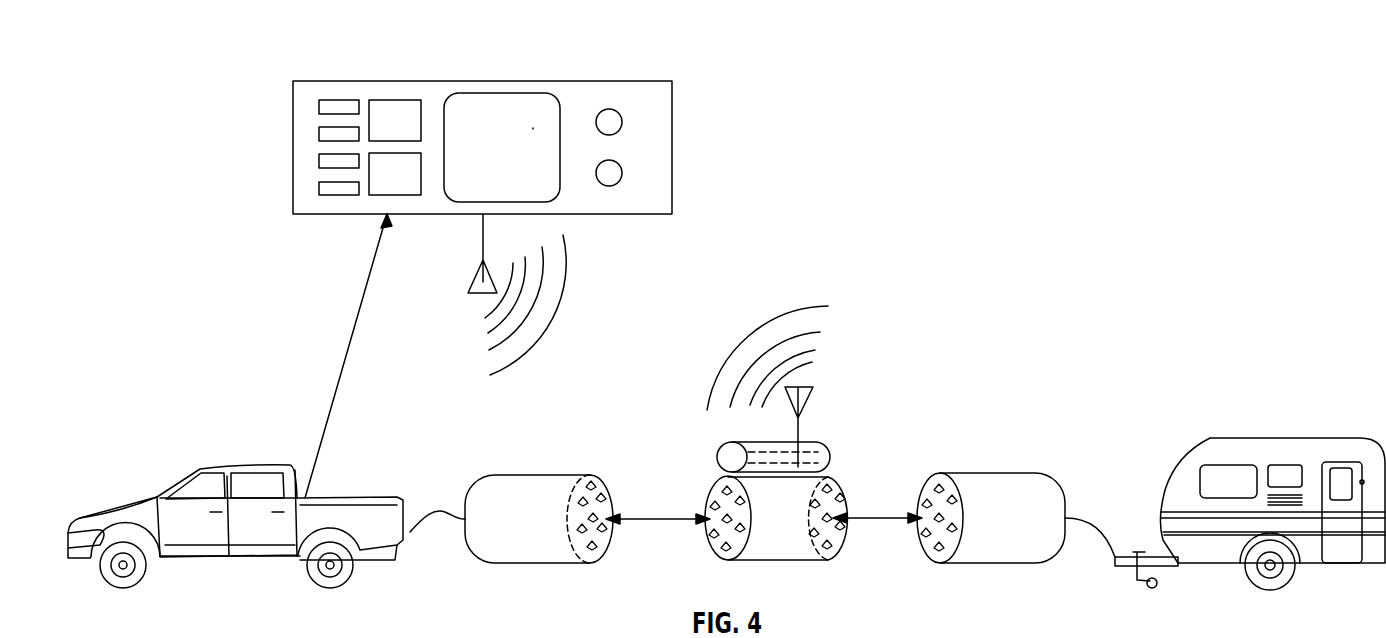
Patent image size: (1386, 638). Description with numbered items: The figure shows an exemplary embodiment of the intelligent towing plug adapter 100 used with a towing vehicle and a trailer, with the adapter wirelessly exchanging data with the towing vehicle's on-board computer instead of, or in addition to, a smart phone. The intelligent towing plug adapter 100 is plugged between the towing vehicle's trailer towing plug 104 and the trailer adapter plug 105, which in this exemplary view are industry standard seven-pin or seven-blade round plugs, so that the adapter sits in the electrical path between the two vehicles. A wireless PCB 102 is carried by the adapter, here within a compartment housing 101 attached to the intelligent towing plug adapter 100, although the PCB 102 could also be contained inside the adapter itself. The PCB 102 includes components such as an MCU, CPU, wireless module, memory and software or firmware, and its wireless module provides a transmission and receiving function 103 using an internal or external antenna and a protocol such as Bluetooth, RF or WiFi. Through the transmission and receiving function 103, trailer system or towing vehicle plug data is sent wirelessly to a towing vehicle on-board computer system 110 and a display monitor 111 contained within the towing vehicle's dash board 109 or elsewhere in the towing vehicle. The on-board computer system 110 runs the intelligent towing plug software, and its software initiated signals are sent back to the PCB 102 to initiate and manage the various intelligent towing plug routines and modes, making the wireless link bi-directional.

The intelligent towing plug adapter 100 is at (775, 560).
The compartment housing 101 is at (815, 437).
The PCB 102 is at (830, 458).
The transmission and receiving function 103 is at (825, 340).
The trailer towing plug 104 is at (540, 475).
The trailer adapter plug 105 is at (972, 473).
The dash board 109 is at (332, 81).
The towing vehicle on-board computer system 110 is at (498, 93).
The display monitor 111 is at (533, 128).